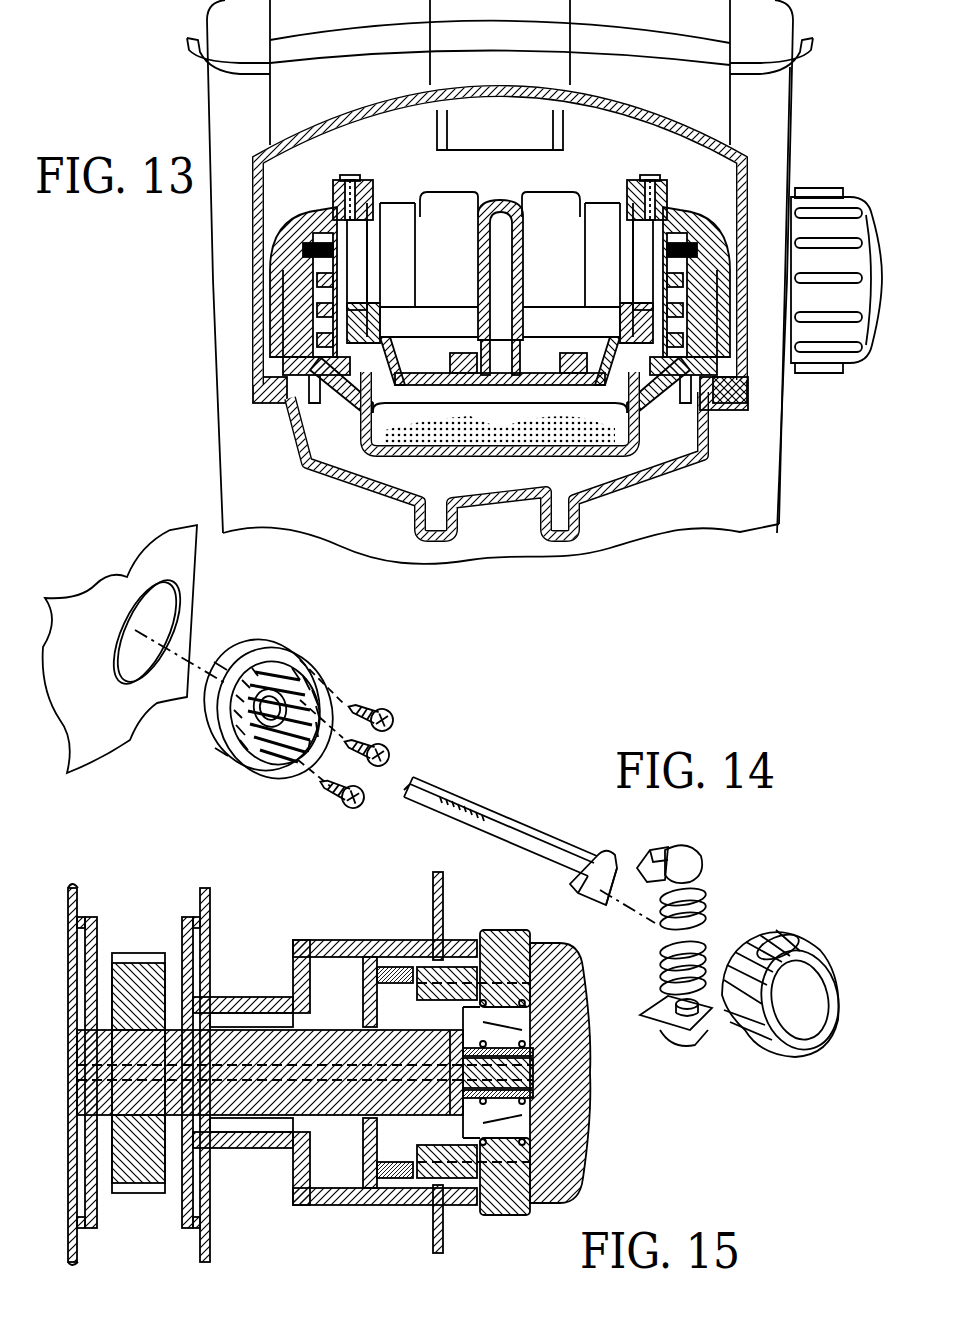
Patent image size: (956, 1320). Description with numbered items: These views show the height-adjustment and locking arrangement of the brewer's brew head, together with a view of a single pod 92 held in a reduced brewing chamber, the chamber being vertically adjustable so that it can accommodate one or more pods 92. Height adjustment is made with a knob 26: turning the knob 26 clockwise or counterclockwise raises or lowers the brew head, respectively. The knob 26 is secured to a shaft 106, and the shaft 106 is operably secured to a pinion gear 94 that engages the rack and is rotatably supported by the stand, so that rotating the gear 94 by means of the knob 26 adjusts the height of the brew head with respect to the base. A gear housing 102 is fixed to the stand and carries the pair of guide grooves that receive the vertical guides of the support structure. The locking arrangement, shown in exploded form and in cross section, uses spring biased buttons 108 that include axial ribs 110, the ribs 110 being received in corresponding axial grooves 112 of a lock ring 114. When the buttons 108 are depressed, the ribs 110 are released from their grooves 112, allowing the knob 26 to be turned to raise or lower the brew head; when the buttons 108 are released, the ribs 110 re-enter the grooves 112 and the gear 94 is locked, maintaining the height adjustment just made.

In FIG. 13, the knob 26 is at (817, 328).
In FIG. 14, the knob 26 is at (813, 950).
In FIG. 15, the knob 26 is at (583, 1137).
In FIG. 13, the pod 92 is at (608, 455).
In FIG. 15, the pinion gear 94 is at (137, 957).
In FIG. 15, the gear housing 102 is at (70, 900).
In FIG. 14, the shaft 106 is at (478, 795).
In FIG. 15, the shaft 106 is at (257, 1047).
In FIG. 14, the spring biased buttons 108 is at (693, 850).
In FIG. 15, the spring biased buttons 108 is at (497, 932).
In FIG. 14, the axial ribs 110 is at (650, 850).
In FIG. 15, the axial ribs 110 is at (407, 977).
In FIG. 14, the axial grooves 112 is at (330, 685).
In FIG. 14, the lock ring 114 is at (265, 655).